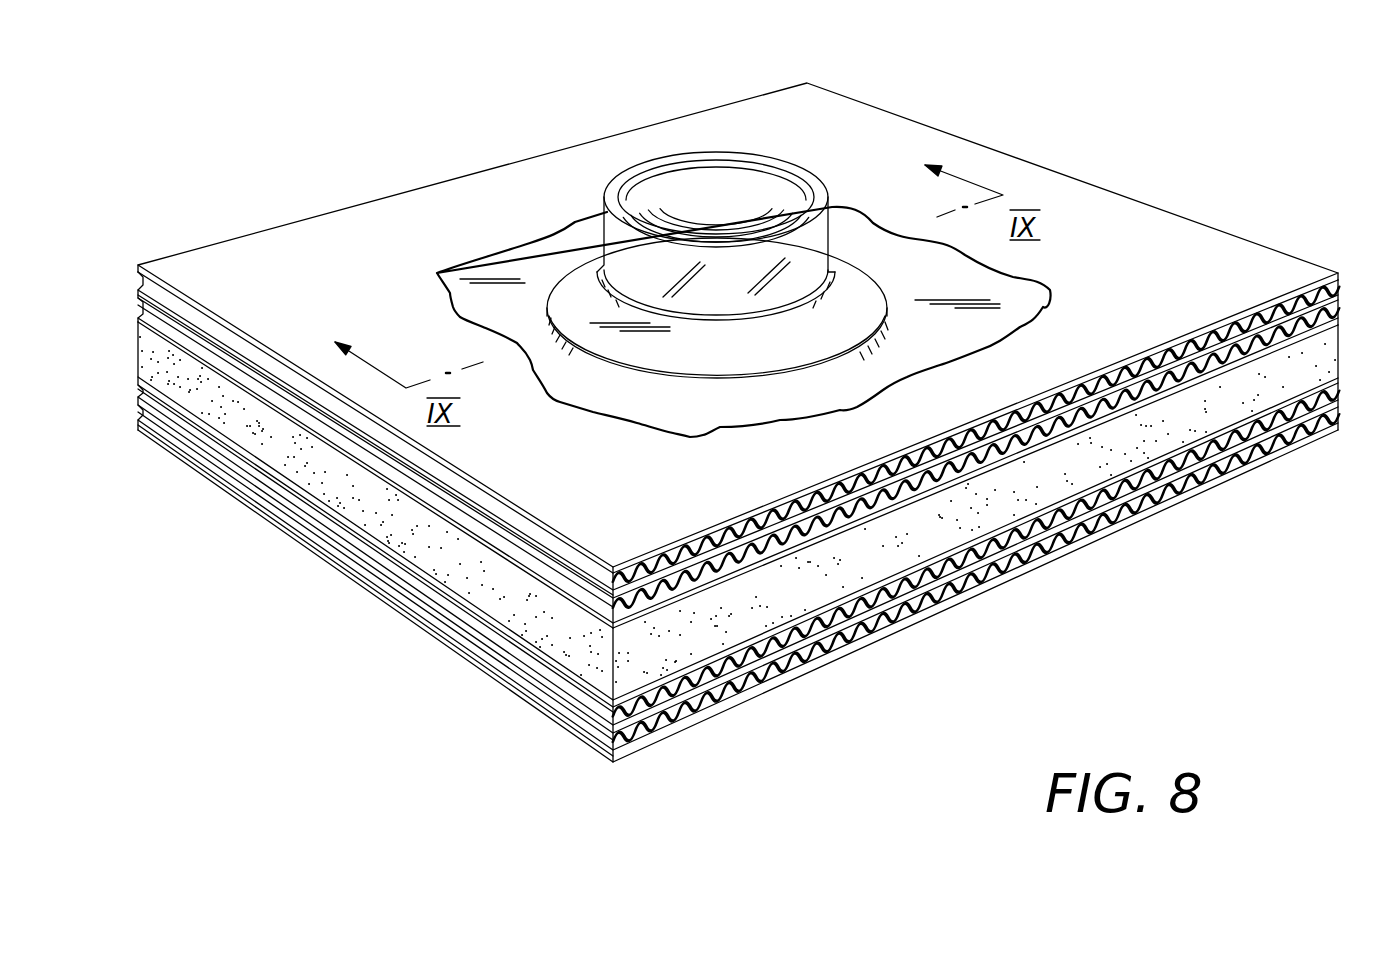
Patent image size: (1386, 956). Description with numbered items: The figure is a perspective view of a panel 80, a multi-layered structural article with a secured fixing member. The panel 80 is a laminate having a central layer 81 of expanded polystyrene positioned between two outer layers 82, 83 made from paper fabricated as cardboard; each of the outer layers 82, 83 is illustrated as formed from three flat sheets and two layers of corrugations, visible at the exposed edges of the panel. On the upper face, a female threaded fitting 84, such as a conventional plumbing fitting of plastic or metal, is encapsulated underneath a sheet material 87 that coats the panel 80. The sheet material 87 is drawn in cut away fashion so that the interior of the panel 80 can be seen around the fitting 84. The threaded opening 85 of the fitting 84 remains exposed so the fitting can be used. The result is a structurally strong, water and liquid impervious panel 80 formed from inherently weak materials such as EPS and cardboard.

The panel 80 is at (756, 419).
The central layer 81 is at (484, 591).
The outer layer 82 is at (1237, 273).
The outer layer 83 is at (1352, 373).
The female threaded fitting 84 is at (671, 211).
The internal threads 85 is at (738, 215).
The sheet material 87 is at (672, 407).